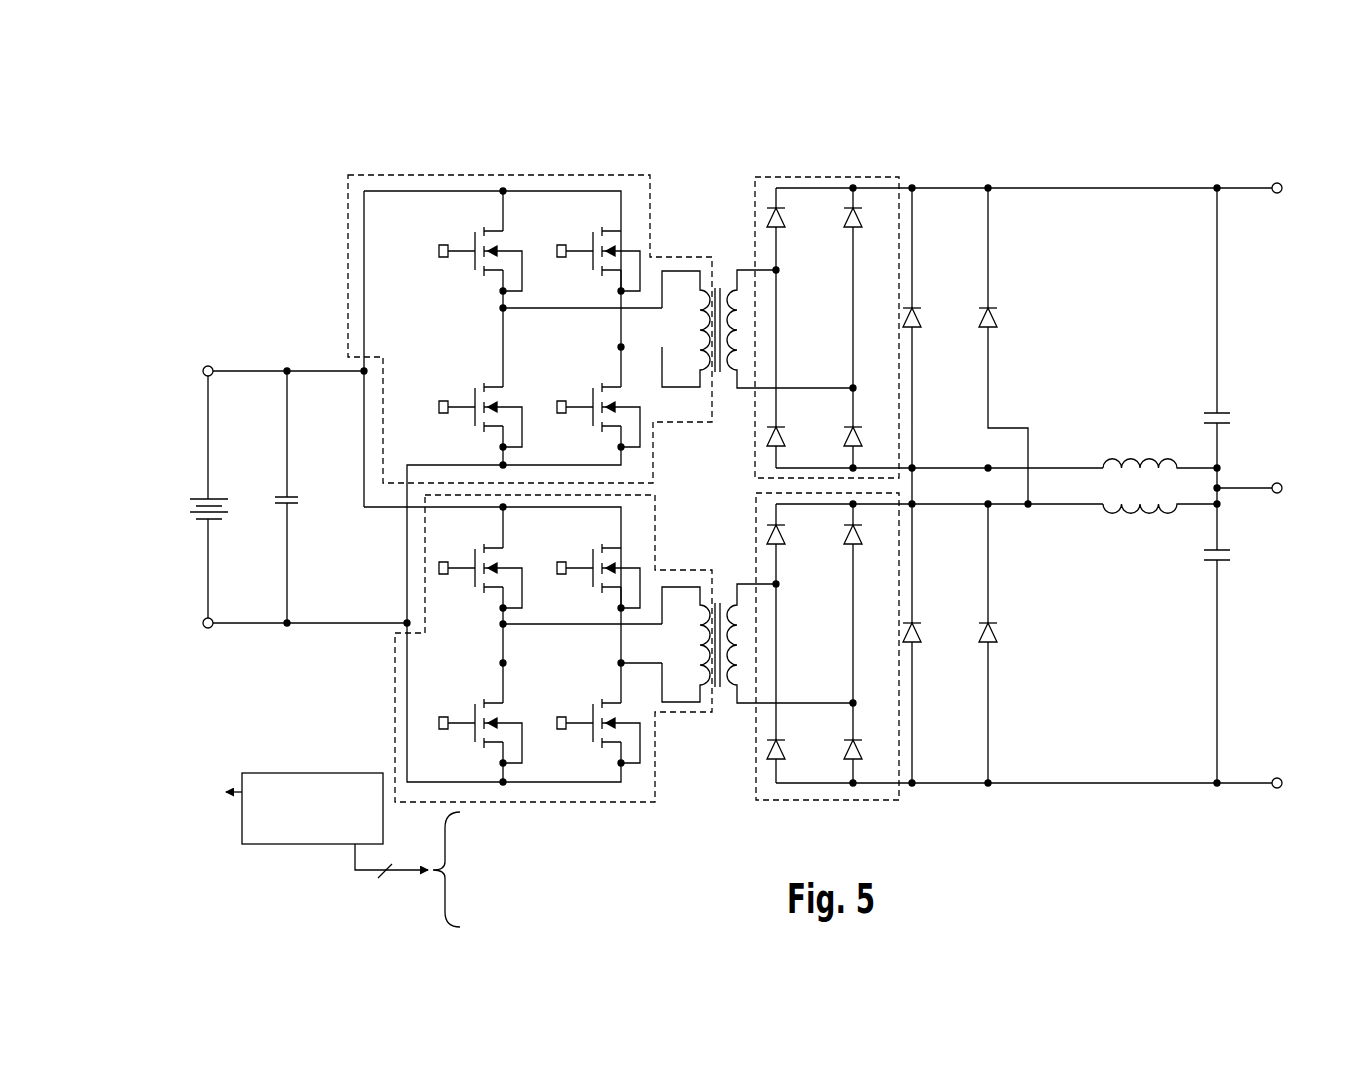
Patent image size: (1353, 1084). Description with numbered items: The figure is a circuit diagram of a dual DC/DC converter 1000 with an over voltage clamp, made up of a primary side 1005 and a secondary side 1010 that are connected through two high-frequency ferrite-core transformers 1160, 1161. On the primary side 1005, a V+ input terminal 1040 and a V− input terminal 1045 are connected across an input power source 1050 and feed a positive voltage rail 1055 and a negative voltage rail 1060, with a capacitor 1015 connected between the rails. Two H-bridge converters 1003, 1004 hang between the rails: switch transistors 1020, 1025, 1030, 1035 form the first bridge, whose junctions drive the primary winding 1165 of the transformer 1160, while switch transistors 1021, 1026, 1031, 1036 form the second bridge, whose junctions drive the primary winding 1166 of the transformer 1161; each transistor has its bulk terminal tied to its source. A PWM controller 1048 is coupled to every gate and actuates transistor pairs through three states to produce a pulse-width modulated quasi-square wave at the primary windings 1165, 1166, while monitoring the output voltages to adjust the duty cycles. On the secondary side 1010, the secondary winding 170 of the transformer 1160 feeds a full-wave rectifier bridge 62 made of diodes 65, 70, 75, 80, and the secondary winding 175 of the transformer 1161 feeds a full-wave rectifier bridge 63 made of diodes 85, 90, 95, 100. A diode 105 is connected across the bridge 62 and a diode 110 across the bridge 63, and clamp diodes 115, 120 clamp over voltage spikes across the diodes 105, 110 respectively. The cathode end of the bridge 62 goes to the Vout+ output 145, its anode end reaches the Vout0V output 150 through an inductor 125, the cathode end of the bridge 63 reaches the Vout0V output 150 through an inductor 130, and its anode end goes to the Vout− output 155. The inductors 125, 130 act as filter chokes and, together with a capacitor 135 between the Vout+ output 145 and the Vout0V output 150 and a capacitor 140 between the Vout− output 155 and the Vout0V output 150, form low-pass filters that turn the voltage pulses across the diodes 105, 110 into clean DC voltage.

The DC/DC converter 1000 is at (177, 140).
The primary side 1005 is at (183, 170).
The secondary side 1010 is at (726, 170).
The converter 1003 is at (652, 190).
The converter 1004 is at (622, 803).
The transformer 1160 is at (712, 193).
The transformer 1161 is at (705, 730).
The primary winding 1165 is at (705, 398).
The primary winding 1166 is at (702, 555).
The secondary winding 170 is at (746, 268).
The secondary winding 175 is at (746, 714).
The full-wave rectifier bridge 62 is at (905, 186).
The full-wave rectifier bridge 63 is at (862, 802).
The diode 65 is at (798, 234).
The diode 70 is at (859, 236).
The diode 75 is at (789, 414).
The diode 80 is at (857, 416).
The diode 85 is at (796, 554).
The diode 90 is at (863, 549).
The diode 95 is at (796, 737).
The diode 100 is at (863, 728).
The diode 105 is at (921, 300).
The diode 110 is at (926, 603).
The diode 115 is at (1006, 302).
The diode 120 is at (1008, 605).
The inductor 125 is at (1131, 442).
The inductor 130 is at (1126, 524).
The capacitor 135 is at (1240, 389).
The capacitor 140 is at (1231, 573).
The Vout+ output 145 is at (1281, 182).
The Vout0V output 150 is at (1277, 493).
The Vout− output 155 is at (1276, 790).
The switch transistor 1020 is at (470, 279).
The switch transistor 1025 is at (583, 261).
The switch transistor 1030 is at (452, 380).
The switch transistor 1035 is at (592, 362).
The switch transistor 1021 is at (475, 592).
The switch transistor 1026 is at (583, 572).
The switch transistor 1031 is at (449, 703).
The switch transistor 1036 is at (569, 703).
The V+ input terminal 1040 is at (211, 366).
The V− input terminal 1045 is at (211, 628).
The input power source 1050 is at (188, 540).
The positive voltage rail 1055 is at (323, 370).
The negative voltage rail 1060 is at (302, 626).
The capacitor 1015 is at (302, 518).
The PWM controller 1048 is at (332, 773).